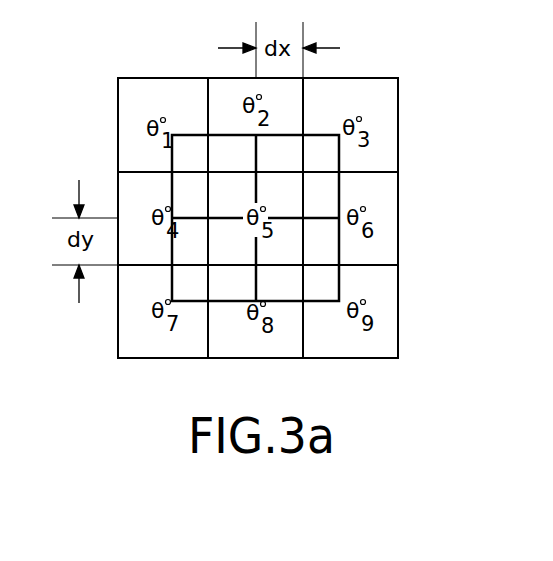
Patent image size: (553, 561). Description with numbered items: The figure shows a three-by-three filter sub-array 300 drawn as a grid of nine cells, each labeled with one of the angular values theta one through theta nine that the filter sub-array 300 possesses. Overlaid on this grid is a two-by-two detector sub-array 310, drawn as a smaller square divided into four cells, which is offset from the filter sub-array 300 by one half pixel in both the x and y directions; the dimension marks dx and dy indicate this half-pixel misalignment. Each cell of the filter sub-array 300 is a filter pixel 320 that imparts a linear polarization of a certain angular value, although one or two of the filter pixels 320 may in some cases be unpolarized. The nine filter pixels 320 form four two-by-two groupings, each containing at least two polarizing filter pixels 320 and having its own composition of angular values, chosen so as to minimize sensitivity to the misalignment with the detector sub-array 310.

The 3×3 filter sub-array 300 is at (398, 108).
The 2×2 detector sub-array 310 is at (339, 191).
The filter pixel 320 is at (353, 100).